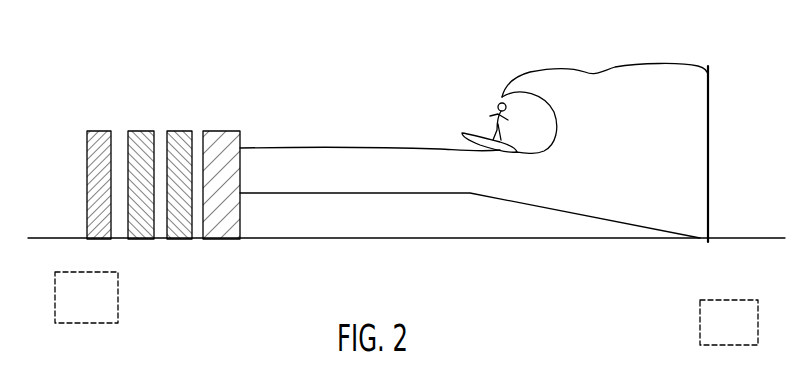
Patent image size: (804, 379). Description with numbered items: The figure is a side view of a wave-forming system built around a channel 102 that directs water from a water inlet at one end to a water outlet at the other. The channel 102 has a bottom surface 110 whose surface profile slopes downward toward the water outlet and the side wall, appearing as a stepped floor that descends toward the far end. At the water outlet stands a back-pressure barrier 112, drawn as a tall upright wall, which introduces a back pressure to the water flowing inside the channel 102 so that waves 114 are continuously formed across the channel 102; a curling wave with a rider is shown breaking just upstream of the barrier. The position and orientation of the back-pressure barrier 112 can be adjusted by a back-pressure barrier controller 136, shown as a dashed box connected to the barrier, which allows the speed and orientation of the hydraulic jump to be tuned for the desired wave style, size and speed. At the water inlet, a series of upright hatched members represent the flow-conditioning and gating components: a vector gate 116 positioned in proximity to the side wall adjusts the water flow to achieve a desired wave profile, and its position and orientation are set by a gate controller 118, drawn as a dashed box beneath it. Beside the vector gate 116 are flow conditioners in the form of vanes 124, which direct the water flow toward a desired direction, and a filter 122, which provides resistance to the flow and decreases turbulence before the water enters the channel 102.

The channel 102 is at (375, 240).
The bottom surface 110 is at (471, 195).
The back-pressure barrier 112 is at (708, 133).
The waves 114 is at (506, 92).
The vector gate 116 is at (87, 185).
The gate controller 118 is at (87, 205).
The filter 122 is at (222, 131).
The vanes 124 is at (184, 131).
The back-pressure barrier controller 136 is at (708, 183).